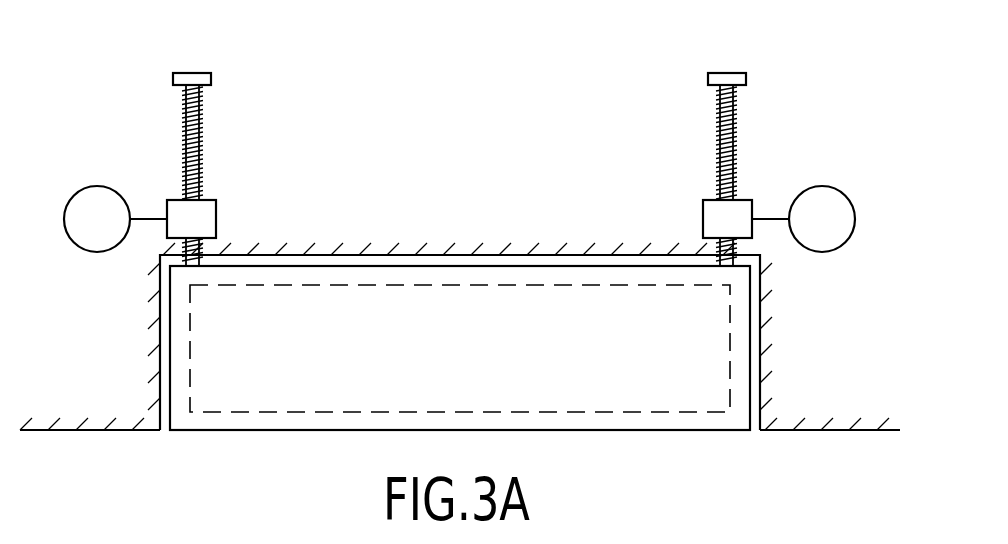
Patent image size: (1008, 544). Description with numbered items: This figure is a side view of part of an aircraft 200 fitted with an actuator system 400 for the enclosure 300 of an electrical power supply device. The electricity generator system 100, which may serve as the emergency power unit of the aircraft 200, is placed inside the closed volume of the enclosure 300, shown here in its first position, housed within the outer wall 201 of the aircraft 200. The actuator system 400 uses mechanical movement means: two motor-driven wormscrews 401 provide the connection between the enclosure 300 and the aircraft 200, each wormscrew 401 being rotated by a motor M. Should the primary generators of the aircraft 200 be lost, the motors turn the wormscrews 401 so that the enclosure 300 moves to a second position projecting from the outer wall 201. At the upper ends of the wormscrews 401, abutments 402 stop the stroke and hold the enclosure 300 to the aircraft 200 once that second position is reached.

The electricity generator system 100 is at (635, 413).
The aircraft 200 is at (838, 385).
The outer wall 201 is at (827, 431).
The enclosure 300 is at (258, 431).
The actuator system 400 is at (483, 147).
The wormscrew 401 is at (204, 146).
The abutment 402 is at (194, 73).